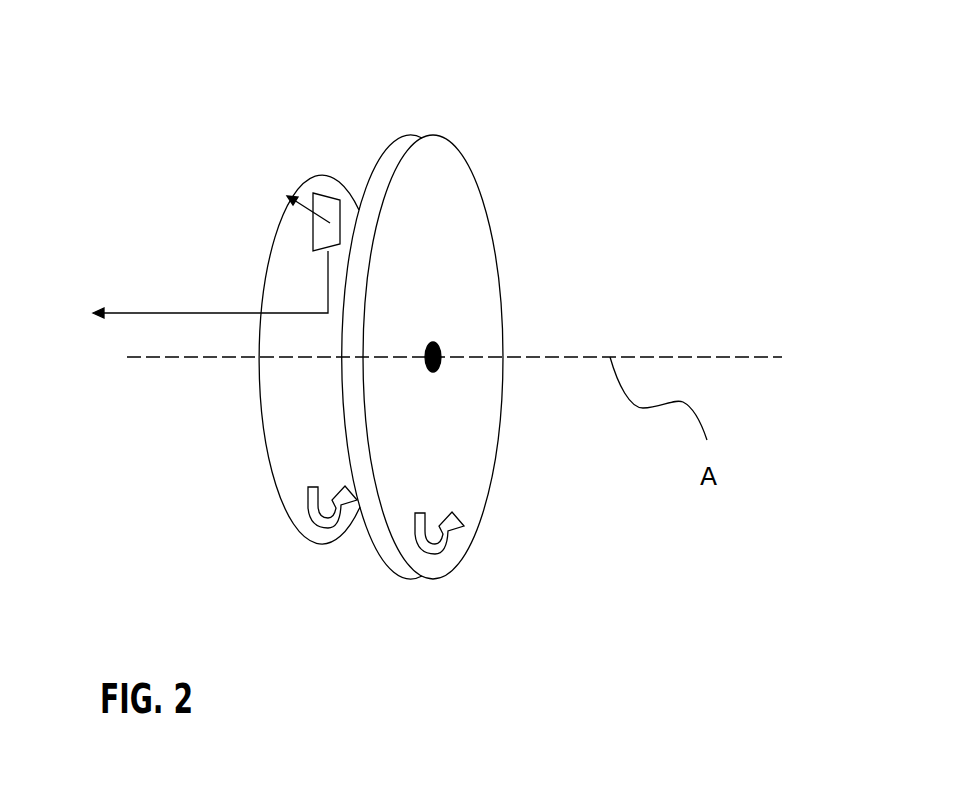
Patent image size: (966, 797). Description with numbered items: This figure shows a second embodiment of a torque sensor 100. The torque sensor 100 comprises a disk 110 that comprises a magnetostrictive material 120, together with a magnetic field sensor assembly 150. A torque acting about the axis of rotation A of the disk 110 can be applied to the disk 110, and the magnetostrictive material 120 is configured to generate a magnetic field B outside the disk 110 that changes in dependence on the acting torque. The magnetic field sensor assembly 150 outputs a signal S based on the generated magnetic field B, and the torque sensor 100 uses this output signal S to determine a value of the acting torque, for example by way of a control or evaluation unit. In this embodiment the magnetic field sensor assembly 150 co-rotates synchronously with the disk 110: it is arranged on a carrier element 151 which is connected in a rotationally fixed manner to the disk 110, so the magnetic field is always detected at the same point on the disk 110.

The torque sensor 100 is at (813, 240).
The disk 110 is at (515, 527).
The magnetostrictive material 120 is at (460, 265).
The magnetic field sensor assembly 150 is at (330, 203).
The carrier element 151 is at (260, 420).